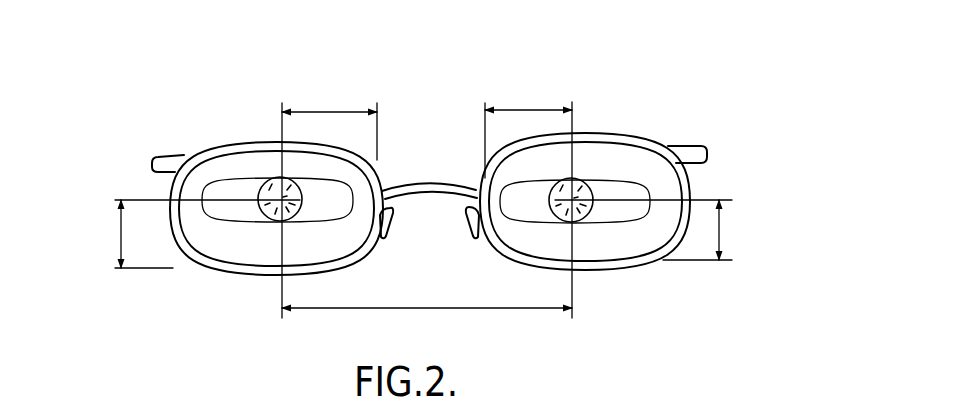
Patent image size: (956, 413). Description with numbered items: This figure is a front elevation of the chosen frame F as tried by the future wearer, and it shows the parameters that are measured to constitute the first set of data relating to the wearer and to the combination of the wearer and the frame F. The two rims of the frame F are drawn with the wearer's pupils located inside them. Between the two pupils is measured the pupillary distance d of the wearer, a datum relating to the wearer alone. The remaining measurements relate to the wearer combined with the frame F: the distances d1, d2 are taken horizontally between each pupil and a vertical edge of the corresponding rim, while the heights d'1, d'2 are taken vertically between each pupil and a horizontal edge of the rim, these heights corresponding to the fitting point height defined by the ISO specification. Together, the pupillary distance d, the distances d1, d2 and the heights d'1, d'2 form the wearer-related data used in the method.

The chosen frame F is at (182, 255).
The distance between pupil and vertical rim edge d1 is at (329, 201).
The distance between pupil and vertical rim edge d2 is at (528, 200).
The pupillary distance d is at (427, 296).
The height between pupil and horizontal rim edge d'1 is at (198, 234).
The height between pupil and horizontal rim edge d'2 is at (650, 230).